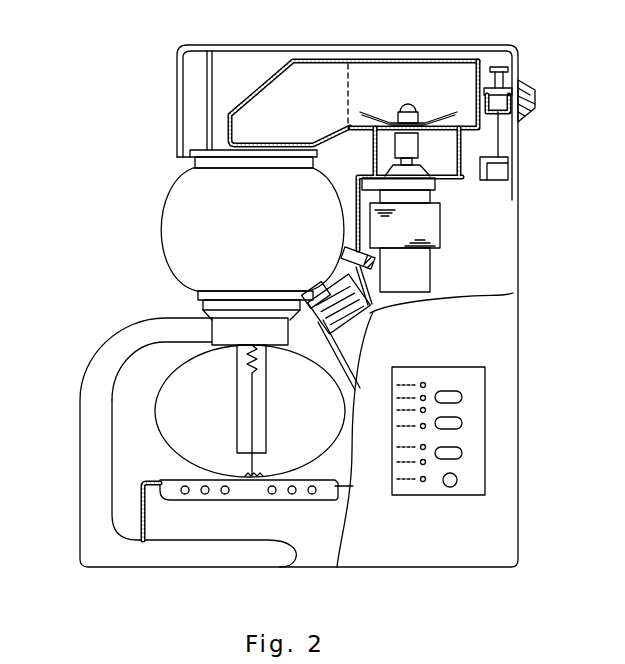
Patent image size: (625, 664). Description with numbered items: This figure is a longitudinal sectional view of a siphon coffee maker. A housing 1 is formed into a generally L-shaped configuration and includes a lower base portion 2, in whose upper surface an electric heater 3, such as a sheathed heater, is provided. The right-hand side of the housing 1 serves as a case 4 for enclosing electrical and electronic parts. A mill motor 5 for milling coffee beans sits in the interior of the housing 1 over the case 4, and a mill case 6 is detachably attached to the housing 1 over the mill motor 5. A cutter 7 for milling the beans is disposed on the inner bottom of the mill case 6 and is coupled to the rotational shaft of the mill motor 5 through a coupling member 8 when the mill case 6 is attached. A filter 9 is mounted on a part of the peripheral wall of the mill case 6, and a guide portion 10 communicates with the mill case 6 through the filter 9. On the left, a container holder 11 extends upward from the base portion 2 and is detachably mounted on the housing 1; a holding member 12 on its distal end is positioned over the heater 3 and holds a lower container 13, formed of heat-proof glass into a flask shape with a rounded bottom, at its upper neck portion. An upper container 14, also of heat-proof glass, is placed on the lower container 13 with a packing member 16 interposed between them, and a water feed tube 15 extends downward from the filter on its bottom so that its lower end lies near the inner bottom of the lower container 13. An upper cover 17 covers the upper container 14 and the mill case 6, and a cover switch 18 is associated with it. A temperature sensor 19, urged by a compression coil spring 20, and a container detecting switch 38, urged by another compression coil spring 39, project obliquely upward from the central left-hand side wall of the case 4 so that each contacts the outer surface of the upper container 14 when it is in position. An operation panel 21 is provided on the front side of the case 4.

The housing 1 is at (519, 357).
The base portion 2 is at (313, 567).
The electric heater 3 is at (180, 500).
The case 4 is at (518, 432).
The mill motor 5 is at (440, 223).
The mill case 6 is at (427, 58).
The cutter 7 is at (373, 117).
The coupling member 8 is at (418, 150).
The filter 9 is at (345, 80).
The guide portion 10 is at (270, 70).
The container holder 11 is at (80, 474).
The holding member 12 is at (217, 333).
The lower container 13 is at (153, 410).
The upper container 14 is at (160, 237).
The water feed tube 15 is at (235, 392).
The packing member 16 is at (197, 296).
The upper cover 17 is at (222, 46).
The cover switch 18 is at (497, 64).
The temperature sensor 19 is at (302, 294).
The compression coil spring 20 is at (373, 320).
The operation panel 21 is at (485, 472).
The container detecting switch 38 is at (340, 253).
The compression coil spring 39 is at (380, 280).